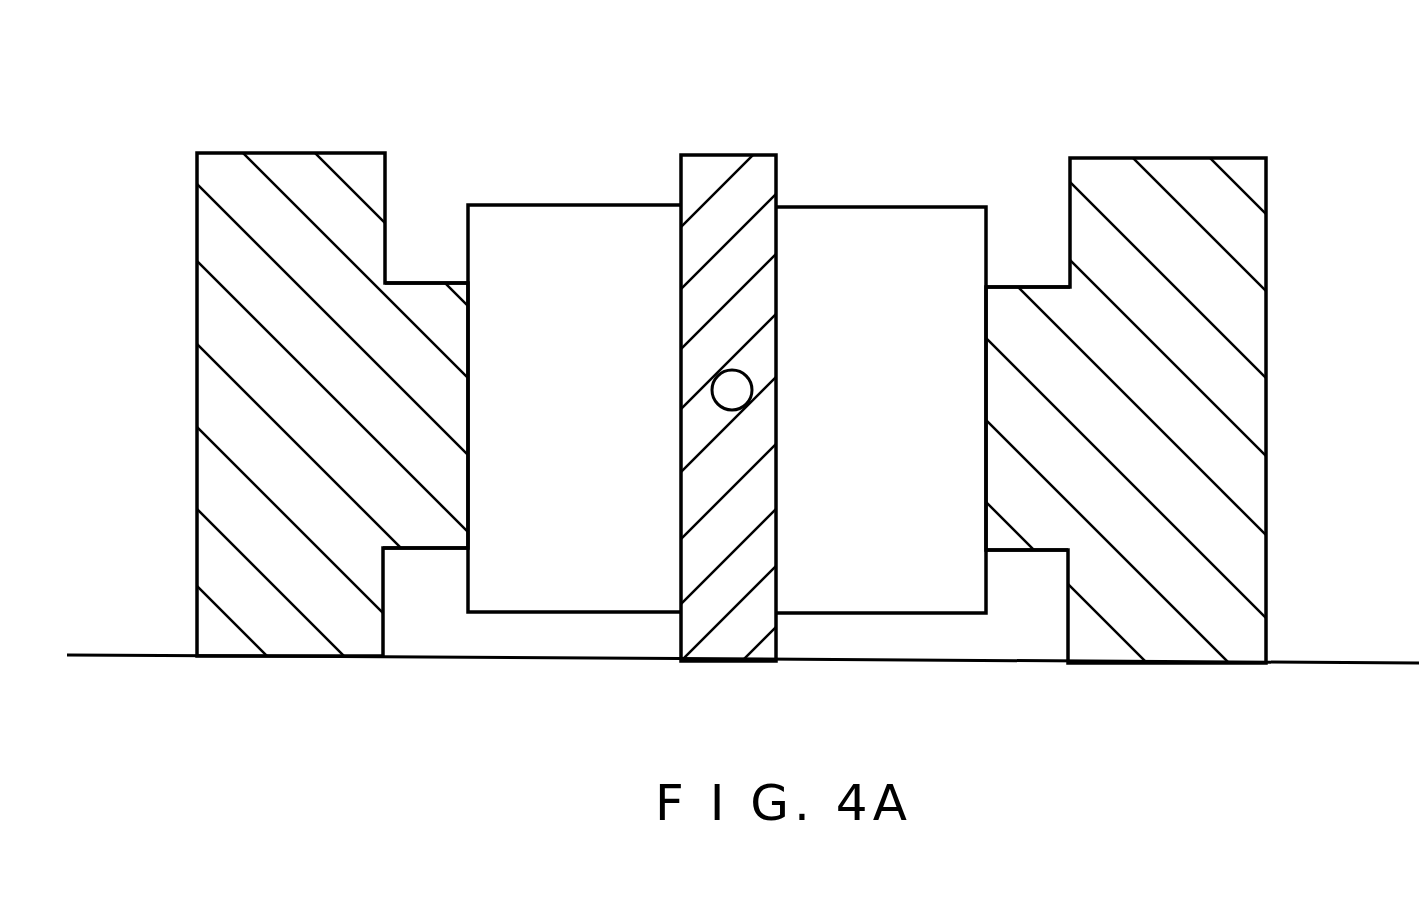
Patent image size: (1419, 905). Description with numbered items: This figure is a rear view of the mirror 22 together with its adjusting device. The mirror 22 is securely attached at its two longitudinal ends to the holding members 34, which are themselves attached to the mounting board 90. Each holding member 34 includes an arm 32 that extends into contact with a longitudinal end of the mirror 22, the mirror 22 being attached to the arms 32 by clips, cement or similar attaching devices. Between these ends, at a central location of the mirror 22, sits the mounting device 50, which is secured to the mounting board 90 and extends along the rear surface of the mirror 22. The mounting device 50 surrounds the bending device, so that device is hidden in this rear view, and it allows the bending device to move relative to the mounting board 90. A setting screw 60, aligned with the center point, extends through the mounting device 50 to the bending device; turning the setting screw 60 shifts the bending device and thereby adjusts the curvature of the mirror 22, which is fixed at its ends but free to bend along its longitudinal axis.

The mirror 22 is at (870, 207).
The arms 32 is at (428, 283).
The holding members 34 is at (284, 153).
The mounting device 50 is at (733, 155).
The setting screw 60 is at (712, 389).
The mounting board 90 is at (1380, 663).